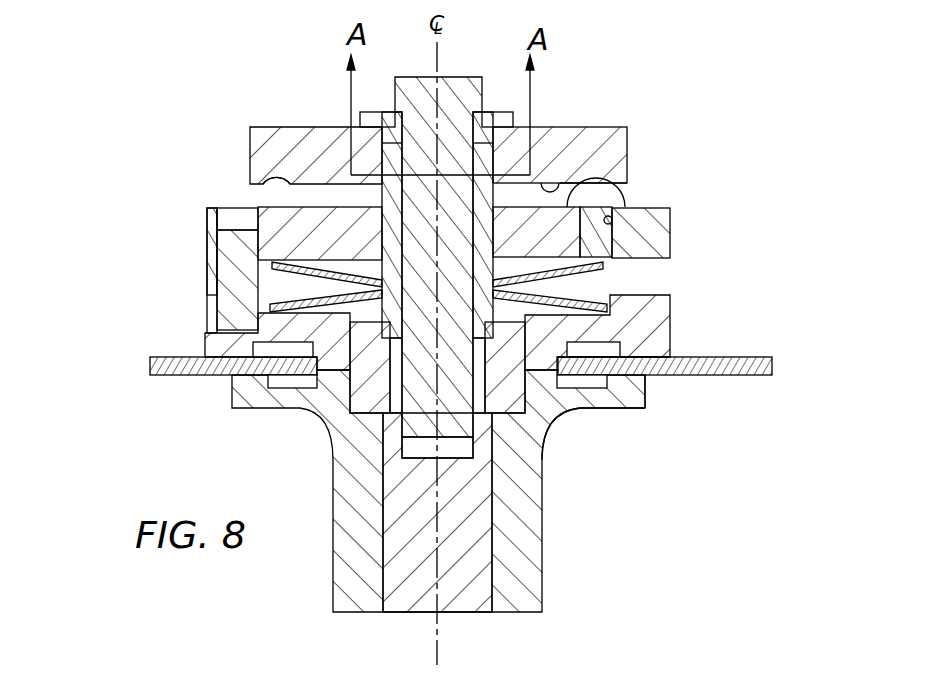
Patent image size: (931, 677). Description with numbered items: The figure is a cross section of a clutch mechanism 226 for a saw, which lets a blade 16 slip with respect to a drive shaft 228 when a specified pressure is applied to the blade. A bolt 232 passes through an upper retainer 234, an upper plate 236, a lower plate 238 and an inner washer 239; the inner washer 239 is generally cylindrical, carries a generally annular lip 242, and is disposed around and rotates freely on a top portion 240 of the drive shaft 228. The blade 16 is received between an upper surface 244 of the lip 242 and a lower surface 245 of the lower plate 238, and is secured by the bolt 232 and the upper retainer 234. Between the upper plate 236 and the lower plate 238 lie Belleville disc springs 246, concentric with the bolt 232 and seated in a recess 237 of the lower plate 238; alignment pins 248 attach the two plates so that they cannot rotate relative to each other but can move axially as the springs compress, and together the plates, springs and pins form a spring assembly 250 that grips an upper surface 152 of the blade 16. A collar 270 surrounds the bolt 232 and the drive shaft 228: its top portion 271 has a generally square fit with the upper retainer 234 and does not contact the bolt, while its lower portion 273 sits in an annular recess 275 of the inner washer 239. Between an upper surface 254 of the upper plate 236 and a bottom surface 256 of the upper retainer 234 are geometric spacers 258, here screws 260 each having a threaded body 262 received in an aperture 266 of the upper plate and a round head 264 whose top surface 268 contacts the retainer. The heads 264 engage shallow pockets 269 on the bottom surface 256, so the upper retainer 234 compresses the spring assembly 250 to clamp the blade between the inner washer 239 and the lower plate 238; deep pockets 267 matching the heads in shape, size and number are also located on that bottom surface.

The clutch mechanism 226 is at (88, 72).
The bolt 232 is at (458, 97).
The top portion 271 is at (503, 137).
The upper surface 254 is at (388, 197).
The deep pockets 267 is at (277, 170).
The collar 270 is at (280, 176).
The upper retainer 234 is at (600, 140).
The top surface 268 is at (615, 180).
The shallow pockets 269 is at (580, 183).
The bottom surface 256 is at (549, 183).
The round head 264 is at (612, 186).
The geometric spacers 258 is at (572, 222).
The aperture 266 is at (598, 237).
The screws 260 is at (606, 248).
The threaded body 262 is at (603, 252).
The upper plate 236 is at (335, 226).
The spring assembly 250 is at (145, 257).
The Belleville disc springs 246 is at (257, 263).
The alignment pins 248 is at (222, 268).
The recess 237 is at (606, 297).
The lower plate 238 is at (650, 304).
The lower portion 273 is at (380, 350).
The annular recess 275 is at (370, 417).
The upper surface 152 is at (160, 357).
The blade 16 is at (768, 357).
The lower surface 245 is at (675, 364).
The inner washer 239 is at (532, 532).
The upper surface 244 is at (642, 372).
The annular lip 242 is at (618, 398).
The top portion 240 is at (398, 605).
The drive shaft 228 is at (466, 605).